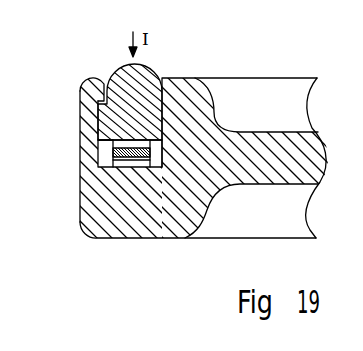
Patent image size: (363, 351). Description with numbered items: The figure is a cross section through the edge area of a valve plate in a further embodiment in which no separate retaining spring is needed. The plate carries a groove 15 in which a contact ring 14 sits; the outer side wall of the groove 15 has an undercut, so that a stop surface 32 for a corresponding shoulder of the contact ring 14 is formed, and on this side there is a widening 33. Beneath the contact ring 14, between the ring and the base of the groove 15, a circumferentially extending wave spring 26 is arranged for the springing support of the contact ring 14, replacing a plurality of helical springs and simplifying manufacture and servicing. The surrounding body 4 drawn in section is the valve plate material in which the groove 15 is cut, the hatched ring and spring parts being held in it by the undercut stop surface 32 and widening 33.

The profile body 4 is at (273, 173).
The contact ring 14 is at (138, 85).
The groove 15 is at (155, 160).
The wave spring 26 is at (128, 160).
The stop surface 32 is at (103, 103).
The widening 33 is at (97, 139).